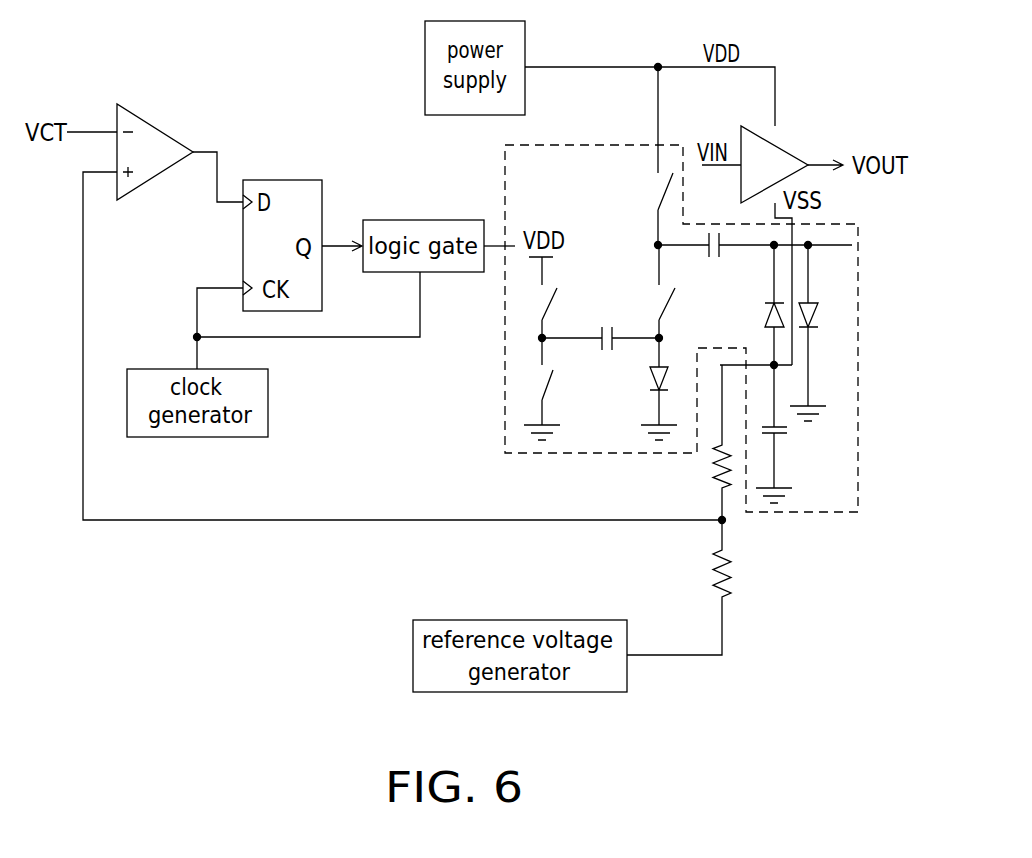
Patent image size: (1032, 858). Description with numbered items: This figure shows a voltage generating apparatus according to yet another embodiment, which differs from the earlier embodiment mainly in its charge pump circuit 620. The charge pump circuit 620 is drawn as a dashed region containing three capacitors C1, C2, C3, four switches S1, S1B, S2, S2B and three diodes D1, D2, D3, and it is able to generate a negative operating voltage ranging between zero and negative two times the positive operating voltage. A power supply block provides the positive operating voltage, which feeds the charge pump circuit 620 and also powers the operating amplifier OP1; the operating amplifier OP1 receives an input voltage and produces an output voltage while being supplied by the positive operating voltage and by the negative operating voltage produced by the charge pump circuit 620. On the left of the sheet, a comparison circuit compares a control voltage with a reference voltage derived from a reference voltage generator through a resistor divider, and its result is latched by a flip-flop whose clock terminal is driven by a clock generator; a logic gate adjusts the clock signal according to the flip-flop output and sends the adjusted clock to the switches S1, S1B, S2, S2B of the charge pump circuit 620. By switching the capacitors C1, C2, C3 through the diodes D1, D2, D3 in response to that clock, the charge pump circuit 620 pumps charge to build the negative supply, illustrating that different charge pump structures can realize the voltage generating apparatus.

The charge pump circuit 620 is at (807, 512).
The operating amplifier OP1 is at (790, 157).
The switch S1 is at (558, 313).
The switch S1B is at (559, 389).
The switch S2 is at (677, 291).
The switch S2B is at (640, 156).
The capacitor C1 is at (755, 262).
The capacitor C2 is at (600, 323).
The capacitor C3 is at (781, 434).
The diode D1 is at (757, 305).
The diode D2 is at (820, 333).
The diode D3 is at (647, 389).